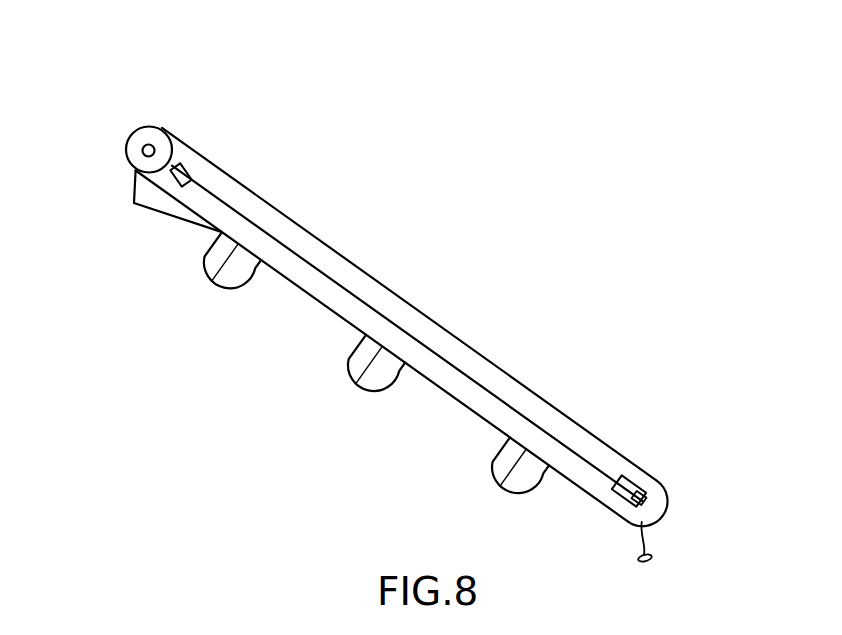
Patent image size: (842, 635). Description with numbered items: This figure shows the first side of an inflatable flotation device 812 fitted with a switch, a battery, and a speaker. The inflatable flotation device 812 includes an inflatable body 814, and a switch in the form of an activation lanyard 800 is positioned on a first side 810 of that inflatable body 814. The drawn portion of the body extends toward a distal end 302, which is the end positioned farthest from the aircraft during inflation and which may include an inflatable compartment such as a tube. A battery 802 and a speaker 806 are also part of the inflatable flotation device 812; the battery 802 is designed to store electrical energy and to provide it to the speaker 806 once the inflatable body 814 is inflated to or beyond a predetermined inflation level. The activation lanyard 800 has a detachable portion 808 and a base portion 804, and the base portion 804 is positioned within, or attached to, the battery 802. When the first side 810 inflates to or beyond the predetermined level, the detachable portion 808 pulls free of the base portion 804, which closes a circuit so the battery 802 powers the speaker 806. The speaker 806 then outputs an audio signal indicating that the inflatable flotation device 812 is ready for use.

The distal end 302 is at (665, 505).
The activation lanyard 800 is at (638, 528).
The battery 802 is at (641, 478).
The base portion 804 is at (650, 497).
The speaker 806 is at (194, 171).
The detachable portion 808 is at (646, 532).
The first side 810 is at (455, 343).
The inflatable flotation device 812 is at (588, 395).
The inflatable body 814 is at (640, 390).